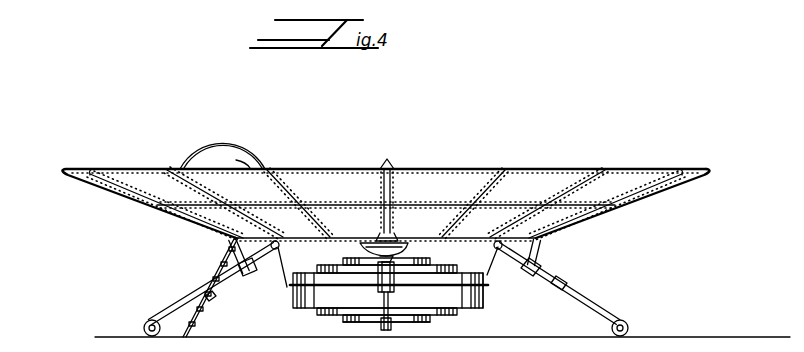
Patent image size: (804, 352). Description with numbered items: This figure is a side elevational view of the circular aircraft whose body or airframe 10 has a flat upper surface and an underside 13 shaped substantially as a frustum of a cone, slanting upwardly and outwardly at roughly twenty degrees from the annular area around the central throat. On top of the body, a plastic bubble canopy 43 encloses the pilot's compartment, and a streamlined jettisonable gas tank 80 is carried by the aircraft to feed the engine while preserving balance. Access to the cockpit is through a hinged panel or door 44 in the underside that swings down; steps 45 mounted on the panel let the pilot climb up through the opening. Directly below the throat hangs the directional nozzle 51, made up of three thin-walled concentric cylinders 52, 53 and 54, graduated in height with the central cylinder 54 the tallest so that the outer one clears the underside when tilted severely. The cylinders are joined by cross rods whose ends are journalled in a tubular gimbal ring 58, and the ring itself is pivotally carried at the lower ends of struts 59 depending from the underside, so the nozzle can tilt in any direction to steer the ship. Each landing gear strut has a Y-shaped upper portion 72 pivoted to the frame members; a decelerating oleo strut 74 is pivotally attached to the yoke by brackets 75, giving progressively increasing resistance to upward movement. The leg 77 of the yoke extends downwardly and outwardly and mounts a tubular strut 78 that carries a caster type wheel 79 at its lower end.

The body or airframe of the aircraft 10 is at (110, 182).
The underside 13 is at (661, 190).
The bubble canopy 43 is at (211, 148).
The jettisonable gas tank 80 is at (399, 244).
The directional nozzle 51 is at (292, 306).
The outer cylinder 52 is at (483, 300).
The intermediate cylinder 53 is at (452, 310).
The central cylinder 54 is at (400, 322).
The tubular gimbal ring 58 is at (322, 286).
The struts 59 is at (395, 282).
The hinged panel or door 44 is at (192, 318).
The steps 45 is at (215, 264).
The Y-shaped upper portion 72 is at (262, 264).
The caster type wheel 79 is at (144, 327).
The decelerating oleo strut 74 is at (541, 252).
The brackets 75 is at (528, 270).
The leg of the Y-shaped yoke 77 is at (548, 290).
The tubular strut 78 is at (578, 306).